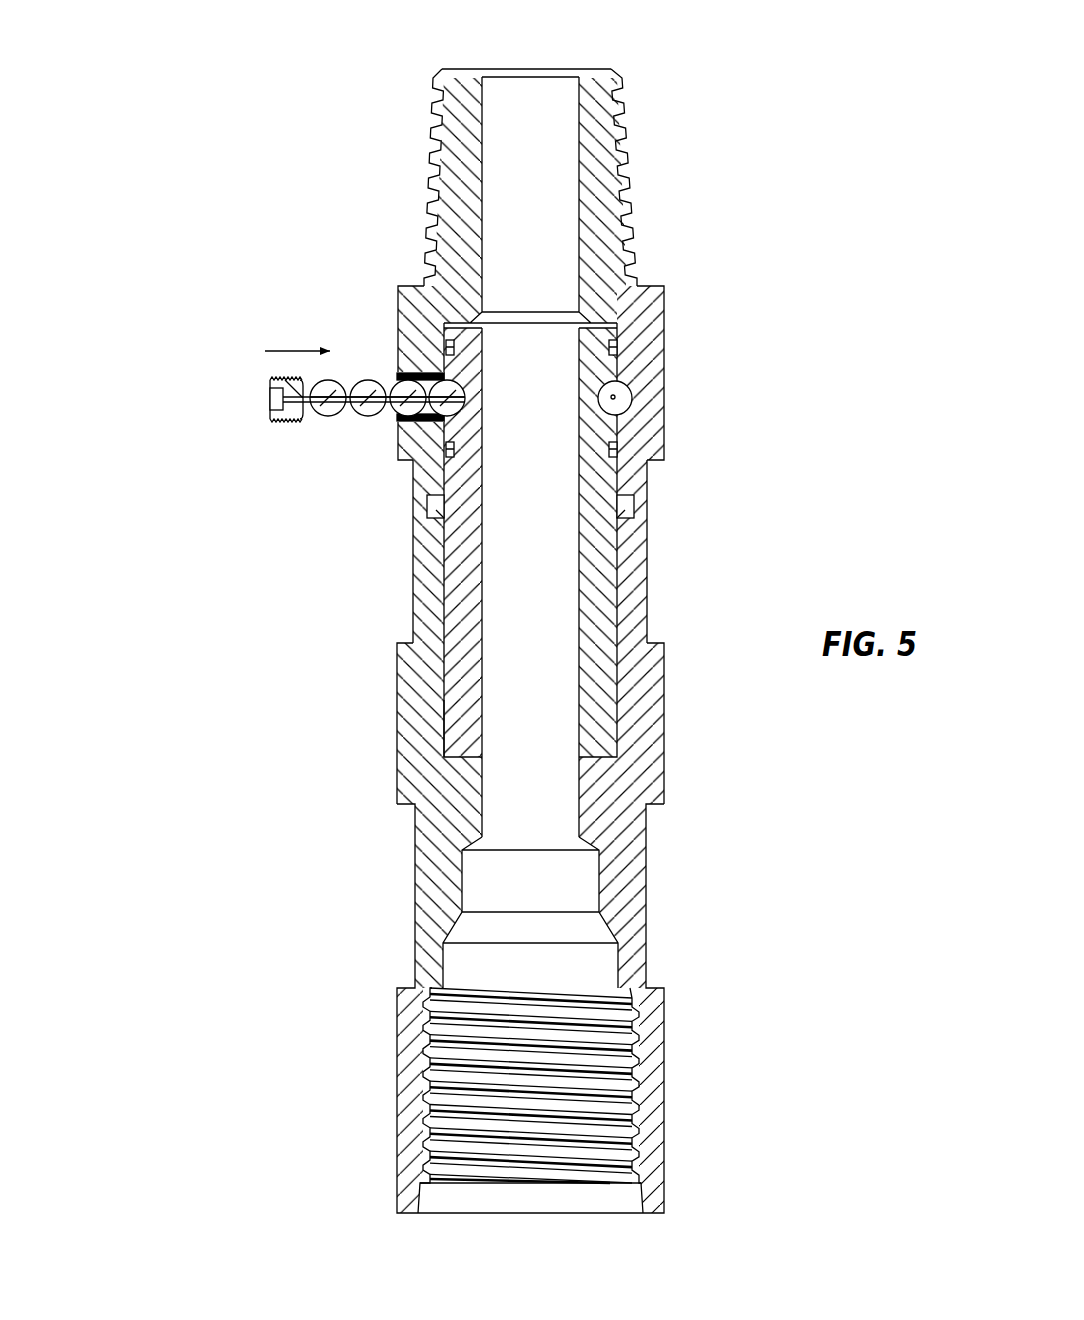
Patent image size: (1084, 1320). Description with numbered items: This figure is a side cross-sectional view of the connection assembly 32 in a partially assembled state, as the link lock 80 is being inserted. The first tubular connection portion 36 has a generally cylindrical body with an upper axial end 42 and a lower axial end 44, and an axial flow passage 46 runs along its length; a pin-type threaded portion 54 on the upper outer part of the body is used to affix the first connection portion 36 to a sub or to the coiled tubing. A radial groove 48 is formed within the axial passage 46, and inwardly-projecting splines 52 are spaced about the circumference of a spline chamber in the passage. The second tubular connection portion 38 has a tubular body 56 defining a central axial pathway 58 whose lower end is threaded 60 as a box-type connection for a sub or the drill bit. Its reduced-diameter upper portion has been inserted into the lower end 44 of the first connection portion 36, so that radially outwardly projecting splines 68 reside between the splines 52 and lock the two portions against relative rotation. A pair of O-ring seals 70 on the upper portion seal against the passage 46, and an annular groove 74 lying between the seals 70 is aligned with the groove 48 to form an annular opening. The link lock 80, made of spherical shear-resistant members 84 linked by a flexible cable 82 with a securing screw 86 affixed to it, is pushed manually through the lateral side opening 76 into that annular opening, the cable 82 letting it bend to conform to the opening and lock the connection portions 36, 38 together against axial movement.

The connection assembly 32 is at (515, 606).
The first tubular connection portion 36 is at (469, 345).
The second tubular connection portion 38 is at (428, 836).
The upper axial end 42 is at (569, 38).
The lower axial end 44 is at (490, 734).
The axial flow passage 46 is at (606, 457).
The radial groove 48 is at (683, 389).
The inwardly-projecting splines 52 is at (428, 540).
The pin-type threaded portion 54 is at (596, 177).
The tubular body 56 is at (429, 929).
The central axial pathway 58 is at (376, 696).
The threaded lower end 60 is at (440, 1085).
The radially outwardly projecting splines 68 is at (597, 538).
The O-ring seals 70 is at (607, 372).
The annular groove 74 is at (342, 460).
The lateral side opening 76 is at (370, 339).
The link lock 80 is at (354, 440).
The flexible cable 82 is at (356, 432).
The shear-resistant members 84 is at (516, 325).
The securing screw 86 is at (182, 381).